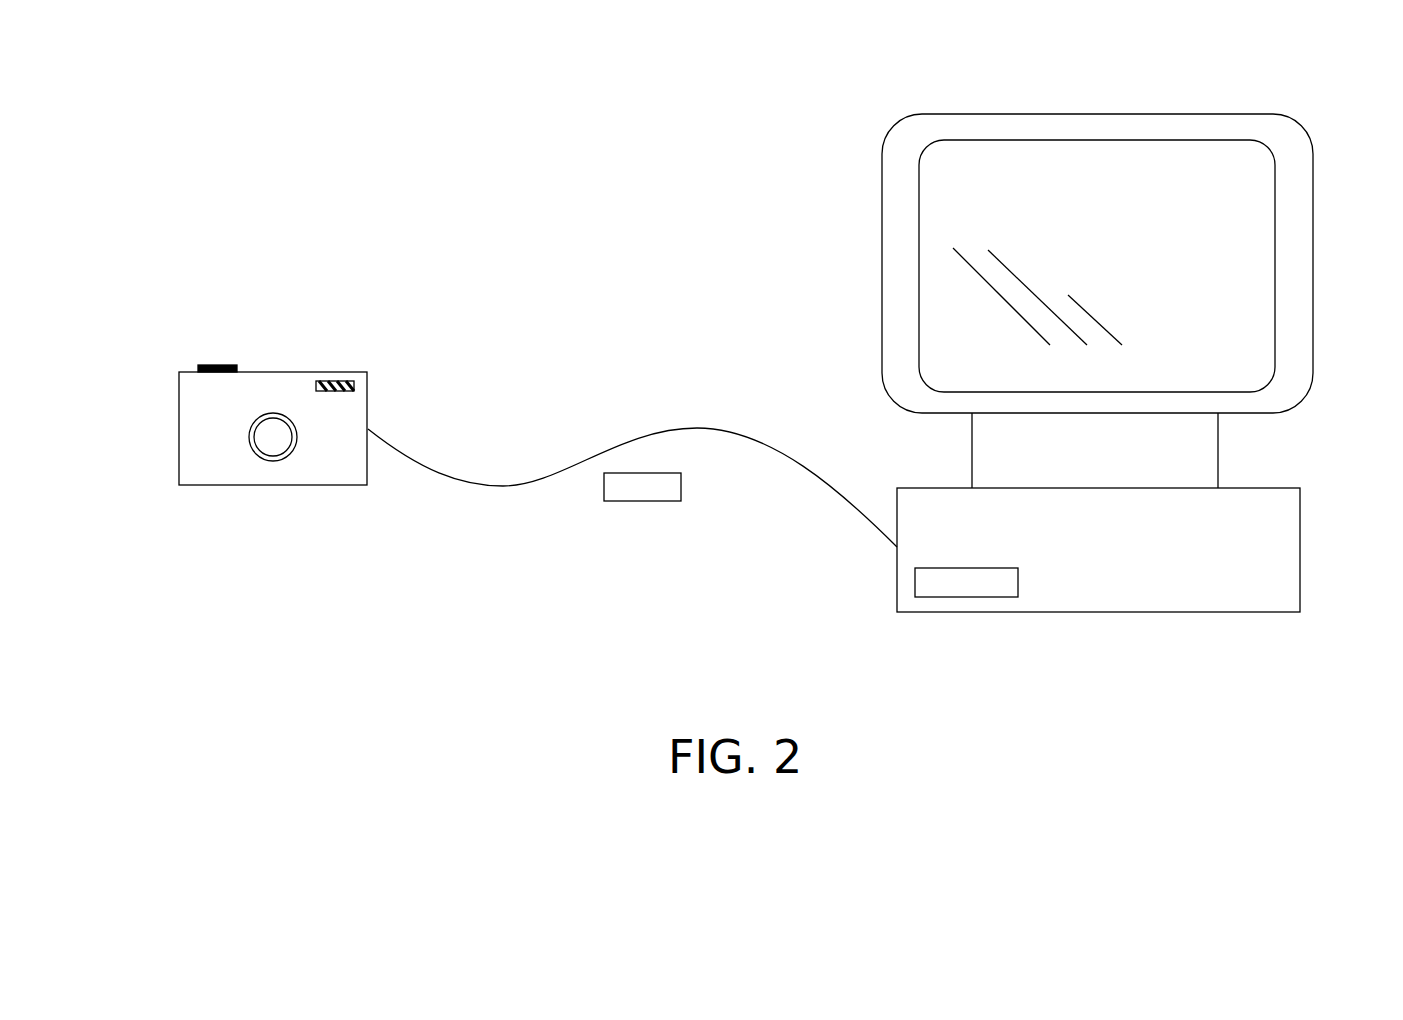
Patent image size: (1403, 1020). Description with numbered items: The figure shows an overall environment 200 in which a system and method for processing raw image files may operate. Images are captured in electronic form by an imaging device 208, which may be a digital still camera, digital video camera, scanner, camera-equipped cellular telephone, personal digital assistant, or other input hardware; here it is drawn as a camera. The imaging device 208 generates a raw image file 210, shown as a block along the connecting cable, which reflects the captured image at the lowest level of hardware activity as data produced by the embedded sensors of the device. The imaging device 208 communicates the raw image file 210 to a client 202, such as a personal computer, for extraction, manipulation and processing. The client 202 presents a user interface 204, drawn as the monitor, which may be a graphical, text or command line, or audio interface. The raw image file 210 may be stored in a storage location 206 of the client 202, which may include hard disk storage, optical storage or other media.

The overall environment 200 is at (748, 257).
The client 202 is at (1128, 512).
The user interface 204 is at (1232, 157).
The storage location 206 is at (1018, 577).
The imaging device 208 is at (343, 372).
The raw image file 210 is at (681, 481).